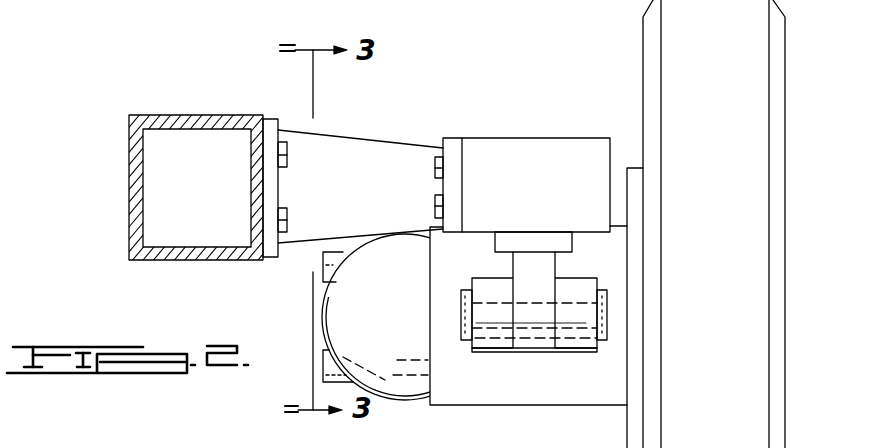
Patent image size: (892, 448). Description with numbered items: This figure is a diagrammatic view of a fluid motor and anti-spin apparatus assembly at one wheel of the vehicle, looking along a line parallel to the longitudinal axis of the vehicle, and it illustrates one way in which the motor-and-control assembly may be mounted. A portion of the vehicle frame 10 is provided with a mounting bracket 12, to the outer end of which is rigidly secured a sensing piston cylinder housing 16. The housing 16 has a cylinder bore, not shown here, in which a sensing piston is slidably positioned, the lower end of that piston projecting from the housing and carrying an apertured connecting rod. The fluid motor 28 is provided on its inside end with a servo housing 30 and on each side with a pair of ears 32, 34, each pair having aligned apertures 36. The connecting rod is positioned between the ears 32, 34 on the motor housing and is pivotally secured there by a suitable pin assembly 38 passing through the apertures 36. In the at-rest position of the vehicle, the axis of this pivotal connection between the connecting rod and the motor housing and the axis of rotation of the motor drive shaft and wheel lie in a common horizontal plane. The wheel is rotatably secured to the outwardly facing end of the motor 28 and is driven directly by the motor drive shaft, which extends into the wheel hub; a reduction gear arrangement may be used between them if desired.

The vehicle frame 10 is at (188, 118).
The mounting bracket 12 is at (384, 152).
The sensing piston cylinder housing 16 is at (543, 148).
The fluid motor 28 is at (540, 393).
The servo housing 30 is at (392, 296).
The ear 32 is at (485, 283).
The ear 34 is at (573, 282).
The aligned apertures 36 is at (500, 328).
The pin assembly 38 is at (460, 333).